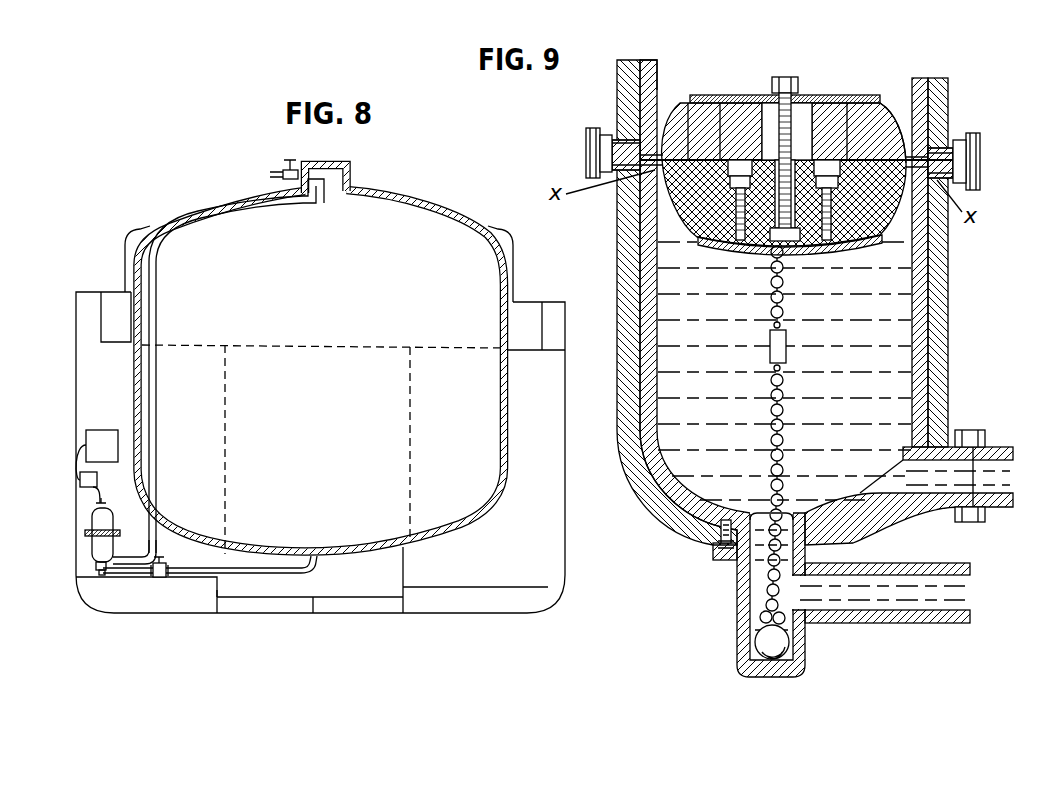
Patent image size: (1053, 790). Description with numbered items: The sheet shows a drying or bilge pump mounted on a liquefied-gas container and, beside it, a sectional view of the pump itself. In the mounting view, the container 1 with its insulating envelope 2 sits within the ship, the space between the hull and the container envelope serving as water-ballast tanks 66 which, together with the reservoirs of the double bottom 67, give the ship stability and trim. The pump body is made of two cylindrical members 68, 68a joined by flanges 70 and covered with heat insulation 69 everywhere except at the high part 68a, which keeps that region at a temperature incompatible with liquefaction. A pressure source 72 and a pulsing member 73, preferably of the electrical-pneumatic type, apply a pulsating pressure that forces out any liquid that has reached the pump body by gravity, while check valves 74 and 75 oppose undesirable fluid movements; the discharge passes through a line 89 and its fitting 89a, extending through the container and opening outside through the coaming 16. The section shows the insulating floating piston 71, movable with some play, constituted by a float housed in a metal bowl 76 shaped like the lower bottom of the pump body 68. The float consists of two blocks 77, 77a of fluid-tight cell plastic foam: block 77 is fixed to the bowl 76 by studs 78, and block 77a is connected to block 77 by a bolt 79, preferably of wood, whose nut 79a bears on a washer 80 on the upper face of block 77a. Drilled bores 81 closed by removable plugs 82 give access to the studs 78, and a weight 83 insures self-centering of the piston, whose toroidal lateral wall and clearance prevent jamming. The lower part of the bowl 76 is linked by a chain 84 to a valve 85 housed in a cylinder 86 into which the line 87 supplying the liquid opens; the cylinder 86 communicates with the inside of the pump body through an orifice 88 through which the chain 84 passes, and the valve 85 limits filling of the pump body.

In FIG. 8, the vessel 1 is at (322, 363).
In FIG. 8, the insulating shell 2 is at (458, 210).
In FIG. 8, the coaming 16 is at (352, 166).
In FIG. 8, the water-ballast tanks 66 is at (118, 308).
In FIG. 8, the double bottom 67 is at (230, 599).
In FIG. 9, the cylindrical member 68 is at (918, 270).
In FIG. 9, the high part of the pump body 68a is at (650, 90).
In FIG. 8, the heat insulation 69 is at (100, 525).
In FIG. 9, the heat insulation 69 is at (618, 108).
In FIG. 8, the flanges 70 is at (92, 533).
In FIG. 9, the flanges 70 is at (586, 150).
In FIG. 9, the insulating floating piston 71 is at (845, 89).
In FIG. 8, the pressure source 72 is at (108, 446).
In FIG. 8, the pulsing member 73 is at (80, 480).
In FIG. 8, the check valve 74 is at (289, 169).
In FIG. 8, the check valve 75 is at (158, 578).
In FIG. 9, the metal bowl 76 is at (665, 203).
In FIG. 9, the float block 77 is at (890, 227).
In FIG. 9, the float block 77a is at (925, 95).
In FIG. 9, the studs 78 is at (728, 247).
In FIG. 9, the bolt 79 is at (905, 105).
In FIG. 9, the nut 79a is at (656, 72).
In FIG. 9, the washer 80 is at (731, 125).
In FIG. 9, the drilled bores 81 is at (725, 155).
In FIG. 9, the removable plugs 82 is at (742, 128).
In FIG. 9, the weight 83 is at (752, 252).
In FIG. 9, the chain 84 is at (770, 405).
In FIG. 9, the valve 85 is at (770, 637).
In FIG. 9, the cylinder 86 is at (737, 583).
In FIG. 8, the line supplying the liquid 87 is at (244, 578).
In FIG. 9, the line supplying the liquid 87 is at (893, 600).
In FIG. 9, the orifice 88 is at (784, 508).
In FIG. 8, the discharge line 89 is at (156, 397).
In FIG. 9, the discharge line 89 is at (1000, 453).
In FIG. 8, the pipe valve 89a is at (270, 173).